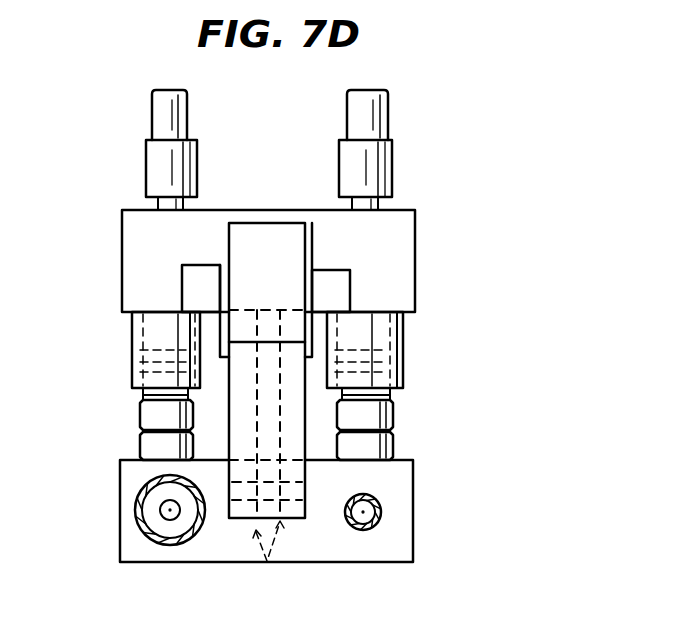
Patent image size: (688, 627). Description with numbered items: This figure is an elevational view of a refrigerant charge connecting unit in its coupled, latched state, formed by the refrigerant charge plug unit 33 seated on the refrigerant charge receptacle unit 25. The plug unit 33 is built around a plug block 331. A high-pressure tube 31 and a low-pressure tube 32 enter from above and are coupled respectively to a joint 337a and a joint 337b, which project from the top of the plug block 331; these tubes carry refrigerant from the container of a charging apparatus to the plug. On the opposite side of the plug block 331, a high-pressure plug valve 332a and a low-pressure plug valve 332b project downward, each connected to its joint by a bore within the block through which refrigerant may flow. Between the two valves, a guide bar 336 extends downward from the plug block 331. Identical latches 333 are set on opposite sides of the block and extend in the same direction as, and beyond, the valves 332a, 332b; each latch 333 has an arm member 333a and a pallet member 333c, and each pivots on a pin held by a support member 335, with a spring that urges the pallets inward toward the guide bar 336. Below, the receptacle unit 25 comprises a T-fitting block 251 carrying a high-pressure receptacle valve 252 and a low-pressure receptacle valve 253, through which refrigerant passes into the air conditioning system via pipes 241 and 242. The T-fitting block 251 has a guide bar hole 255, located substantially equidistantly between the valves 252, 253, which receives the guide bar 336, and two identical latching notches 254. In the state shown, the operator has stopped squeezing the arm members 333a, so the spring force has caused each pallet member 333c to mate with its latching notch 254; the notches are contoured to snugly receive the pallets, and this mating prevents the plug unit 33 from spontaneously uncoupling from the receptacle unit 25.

The high-pressure tube 31 is at (375, 113).
The low-pressure tube 32 is at (163, 104).
The refrigerant charge plug unit 33 is at (422, 243).
The plug block 331 is at (408, 229).
The high-pressure plug valve 332a is at (405, 340).
The low-pressure plug valve 332b is at (132, 333).
The latch 333 is at (306, 253).
The arm member 333a is at (308, 405).
The pallet member 333c is at (305, 505).
The support member 335 is at (190, 279).
The guide bar 336 is at (244, 562).
The high-pressure joint 337a is at (378, 167).
The low-pressure joint 337b is at (158, 157).
The refrigerant charge receptacle unit 25 is at (417, 481).
The pipe 241 is at (381, 512).
The pipe 242 is at (140, 532).
The T-fitting block 251 is at (405, 548).
The high-pressure receptacle valve 252 is at (395, 441).
The low-pressure receptacle valve 253 is at (143, 440).
The latching notch 254 is at (293, 522).
The guide bar hole 255 is at (272, 566).